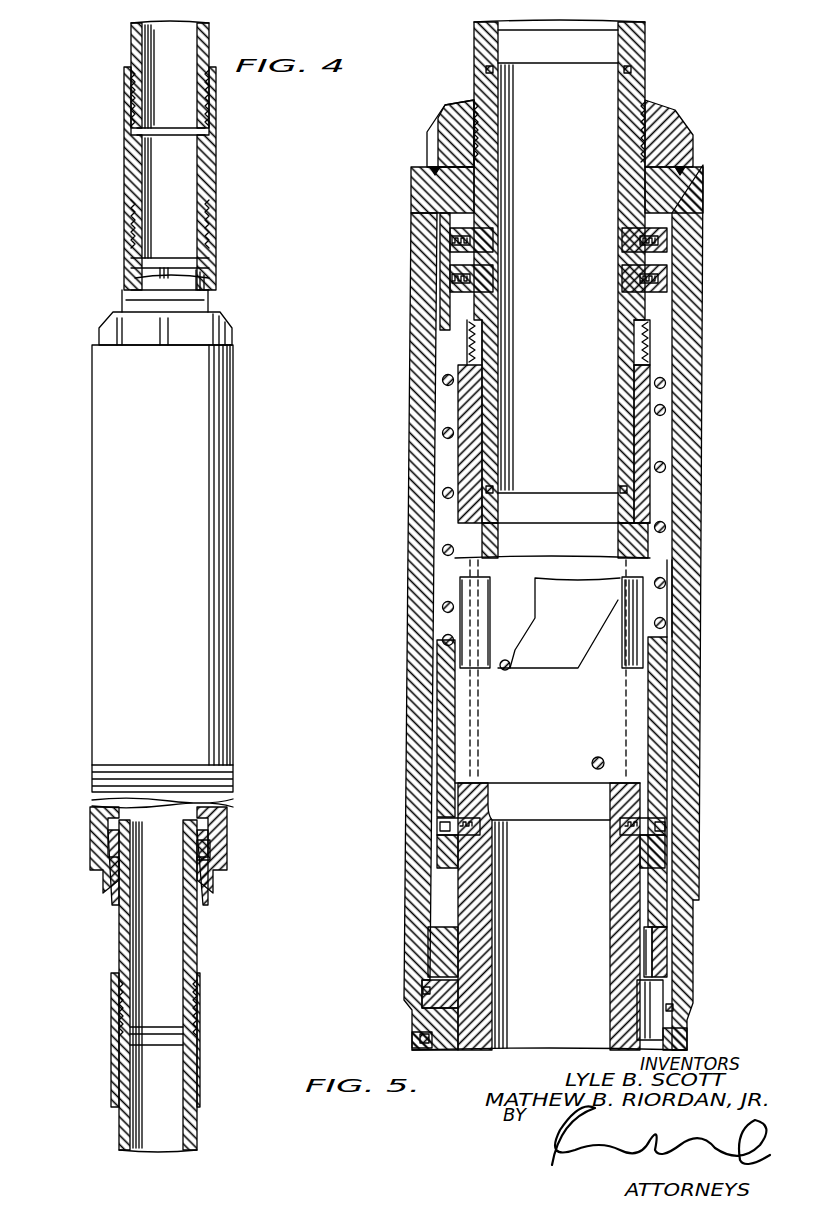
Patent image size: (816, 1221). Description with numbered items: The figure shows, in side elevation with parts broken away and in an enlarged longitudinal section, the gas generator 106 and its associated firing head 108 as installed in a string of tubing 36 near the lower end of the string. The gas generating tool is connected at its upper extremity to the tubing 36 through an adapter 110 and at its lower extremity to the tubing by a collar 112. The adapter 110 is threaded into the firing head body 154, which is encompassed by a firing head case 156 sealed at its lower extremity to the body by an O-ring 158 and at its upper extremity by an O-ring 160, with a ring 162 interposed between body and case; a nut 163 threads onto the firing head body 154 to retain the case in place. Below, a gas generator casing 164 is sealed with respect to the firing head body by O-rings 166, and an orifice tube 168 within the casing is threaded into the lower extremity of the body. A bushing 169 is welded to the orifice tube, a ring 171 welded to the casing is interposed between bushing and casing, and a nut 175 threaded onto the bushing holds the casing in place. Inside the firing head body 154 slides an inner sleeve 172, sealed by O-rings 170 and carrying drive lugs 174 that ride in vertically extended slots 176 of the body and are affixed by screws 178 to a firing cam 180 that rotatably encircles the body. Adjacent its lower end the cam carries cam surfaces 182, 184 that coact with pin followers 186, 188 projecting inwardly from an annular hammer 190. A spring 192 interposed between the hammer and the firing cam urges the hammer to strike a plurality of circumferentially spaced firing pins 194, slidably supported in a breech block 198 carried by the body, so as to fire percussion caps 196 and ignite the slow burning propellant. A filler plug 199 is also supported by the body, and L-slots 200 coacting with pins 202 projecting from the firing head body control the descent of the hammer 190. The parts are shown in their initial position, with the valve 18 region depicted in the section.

In FIG. 5, the valve 18 is at (462, 589).
In FIG. 4, the tubing string 36 is at (131, 50).
In FIG. 4, the gas generator 106 is at (92, 772).
In FIG. 4, the firing head 108 is at (93, 489).
In FIG. 5, the firing head 108 is at (412, 492).
In FIG. 4, the adapter 110 is at (124, 163).
In FIG. 4, the collar 112 is at (111, 1032).
In FIG. 4, the firing head body 154 is at (124, 277).
In FIG. 5, the firing head body 154 is at (648, 97).
In FIG. 5, the firing head case 156 is at (668, 549).
In FIG. 5, the O-ring 158 is at (423, 991).
In FIG. 5, the O-ring 160 is at (470, 192).
In FIG. 5, the ring 162 is at (672, 196).
In FIG. 4, the nut 163 is at (115, 322).
In FIG. 5, the gas generator casing 164 is at (418, 1036).
In FIG. 5, the O-rings 166 is at (675, 1033).
In FIG. 4, the orifice tube 168 is at (119, 942).
In FIG. 4, the bushing 169 is at (205, 905).
In FIG. 5, the O-rings 170 is at (632, 75).
In FIG. 4, the ring 171 is at (215, 858).
In FIG. 5, the inner sleeve 172 is at (492, 93).
In FIG. 5, the drive lugs 174 is at (458, 237).
In FIG. 4, the nut 175 is at (100, 870).
In FIG. 5, the vertically extended slots 176 is at (640, 446).
In FIG. 5, the screws 178 is at (460, 284).
In FIG. 5, the firing cam 180 is at (655, 342).
In FIG. 5, the cam surface 182 is at (592, 648).
In FIG. 5, the cam surface 184 is at (515, 645).
In FIG. 5, the pin follower 186 is at (592, 758).
In FIG. 5, the pin follower 188 is at (500, 668).
In FIG. 5, the annular hammer 190 is at (667, 719).
In FIG. 5, the spring 192 is at (443, 434).
In FIG. 5, the firing pins 194 is at (652, 939).
In FIG. 5, the percussion caps 196 is at (645, 997).
In FIG. 5, the breech block 198 is at (665, 963).
In FIG. 5, the filler plug 199 is at (440, 946).
In FIG. 5, the L-slots 200 is at (445, 756).
In FIG. 5, the pins 202 is at (440, 829).